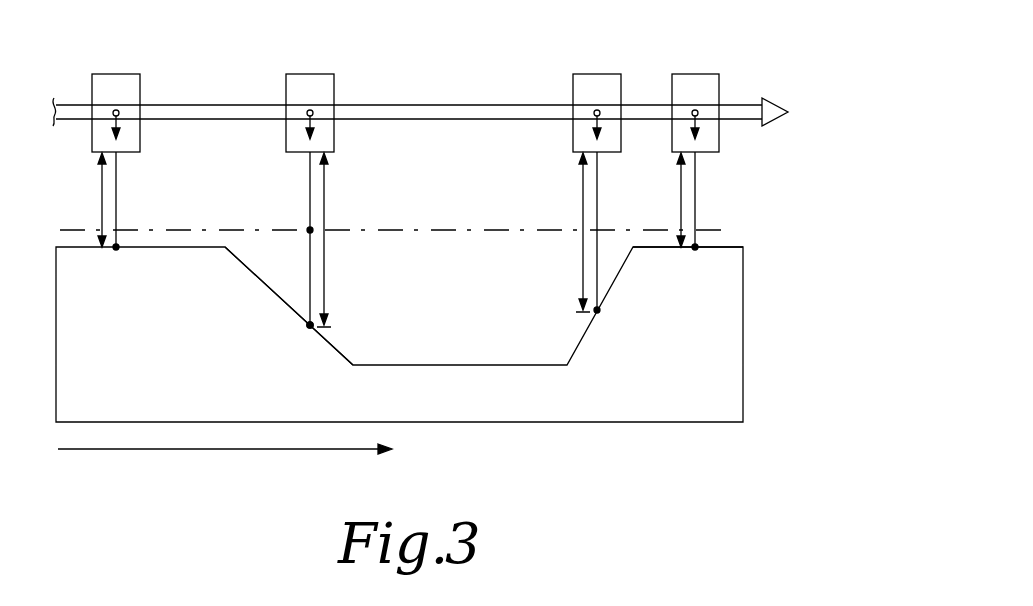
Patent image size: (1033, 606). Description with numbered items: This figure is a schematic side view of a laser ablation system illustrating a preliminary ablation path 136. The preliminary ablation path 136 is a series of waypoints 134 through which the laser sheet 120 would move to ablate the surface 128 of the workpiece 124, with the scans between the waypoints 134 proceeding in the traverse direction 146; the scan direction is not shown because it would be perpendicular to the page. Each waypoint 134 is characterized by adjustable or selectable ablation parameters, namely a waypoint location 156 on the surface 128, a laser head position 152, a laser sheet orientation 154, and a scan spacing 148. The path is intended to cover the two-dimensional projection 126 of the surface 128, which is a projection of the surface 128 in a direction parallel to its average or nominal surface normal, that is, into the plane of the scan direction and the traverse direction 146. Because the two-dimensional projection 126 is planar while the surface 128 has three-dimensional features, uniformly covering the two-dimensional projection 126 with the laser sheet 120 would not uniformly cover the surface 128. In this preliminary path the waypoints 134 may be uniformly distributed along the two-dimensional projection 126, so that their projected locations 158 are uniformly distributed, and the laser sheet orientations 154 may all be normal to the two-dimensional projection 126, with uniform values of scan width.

The laser sheet 120 is at (308, 268).
The workpiece 124 is at (743, 367).
The 2D projection 126 is at (453, 230).
The surface 128 is at (730, 247).
The waypoint 134 is at (155, 82).
The preliminary ablation path 136 is at (418, 120).
The traverse direction 146 is at (183, 450).
The scan spacing 148 is at (325, 279).
The laser head position 152 is at (308, 108).
The laser sheet orientation 154 is at (301, 124).
The waypoint location 156 is at (309, 327).
The projected location 158 is at (308, 229).